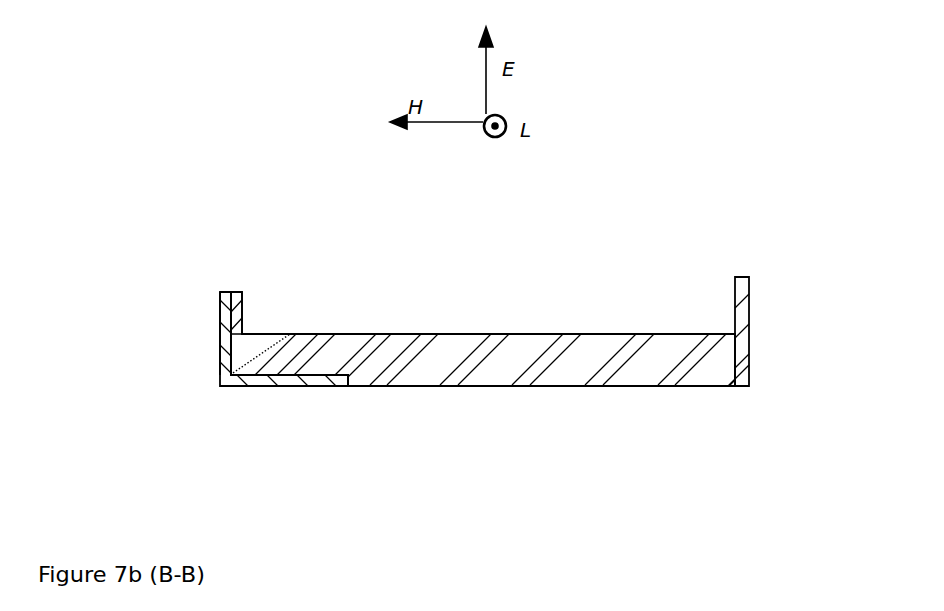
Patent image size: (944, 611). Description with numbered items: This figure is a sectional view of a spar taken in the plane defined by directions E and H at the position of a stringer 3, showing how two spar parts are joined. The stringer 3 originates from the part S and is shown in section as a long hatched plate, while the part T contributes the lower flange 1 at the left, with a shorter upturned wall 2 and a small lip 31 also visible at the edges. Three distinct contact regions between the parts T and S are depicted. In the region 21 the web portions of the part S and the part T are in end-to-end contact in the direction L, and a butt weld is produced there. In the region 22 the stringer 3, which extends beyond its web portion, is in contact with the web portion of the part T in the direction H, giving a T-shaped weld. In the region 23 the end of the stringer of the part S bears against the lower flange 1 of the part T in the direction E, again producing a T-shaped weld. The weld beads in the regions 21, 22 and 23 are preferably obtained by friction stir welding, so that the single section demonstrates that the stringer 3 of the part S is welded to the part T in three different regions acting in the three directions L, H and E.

The lower flange 1 is at (219, 293).
The second frame portion 2 is at (735, 282).
The stringer 3 is at (503, 349).
The region of end-to-end contact 21 is at (338, 387).
The region of contact between stringer and web portion 22 is at (272, 374).
The region of contact between stringer end and lower flange 23 is at (225, 348).
The edge lip of plate 31 is at (235, 293).
The part T is at (204, 381).
The part S is at (697, 384).